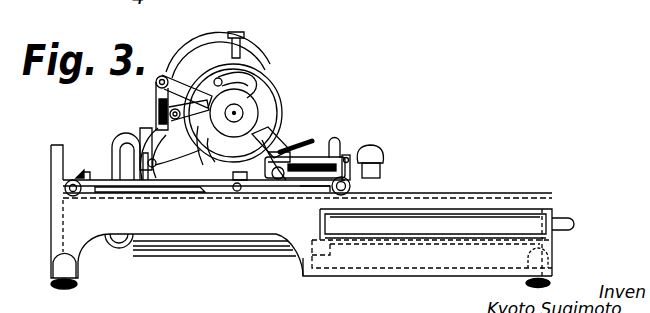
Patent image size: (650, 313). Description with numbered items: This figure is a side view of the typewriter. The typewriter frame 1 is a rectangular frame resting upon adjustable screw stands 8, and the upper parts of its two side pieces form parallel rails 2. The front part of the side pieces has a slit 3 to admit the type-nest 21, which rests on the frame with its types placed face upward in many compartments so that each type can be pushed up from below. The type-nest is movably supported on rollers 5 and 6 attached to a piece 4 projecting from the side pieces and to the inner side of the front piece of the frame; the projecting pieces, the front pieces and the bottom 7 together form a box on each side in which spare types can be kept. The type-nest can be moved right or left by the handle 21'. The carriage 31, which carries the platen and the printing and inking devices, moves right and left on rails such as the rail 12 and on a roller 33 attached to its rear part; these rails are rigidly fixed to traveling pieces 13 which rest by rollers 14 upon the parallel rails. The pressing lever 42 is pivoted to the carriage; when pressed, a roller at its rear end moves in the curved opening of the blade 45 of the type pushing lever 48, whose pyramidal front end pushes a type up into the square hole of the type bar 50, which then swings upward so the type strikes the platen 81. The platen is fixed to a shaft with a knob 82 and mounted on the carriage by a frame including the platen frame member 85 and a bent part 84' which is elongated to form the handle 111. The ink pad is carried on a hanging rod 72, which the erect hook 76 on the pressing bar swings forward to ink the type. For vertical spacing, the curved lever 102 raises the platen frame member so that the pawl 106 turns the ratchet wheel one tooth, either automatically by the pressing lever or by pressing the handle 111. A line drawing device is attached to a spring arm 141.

The typewriter frame 1 is at (52, 159).
The parallel rails 2 is at (523, 208).
The slit 3 is at (470, 209).
The projecting piece 4 is at (312, 258).
The roller 5 is at (332, 249).
The roller 6 is at (528, 252).
The bottom 7 is at (394, 266).
The adjustable screw stand 8 is at (78, 283).
The rail 12 is at (237, 192).
The traveling piece 13 is at (112, 187).
The roller 14 is at (70, 196).
The type-nest 21 is at (435, 225).
The handle 21' is at (531, 223).
The carriage 31 is at (150, 122).
The roller 33 is at (66, 188).
The pressing lever 42 is at (352, 185).
The blade 45 is at (116, 150).
The type pushing lever 48 is at (165, 250).
The type bar 50 is at (330, 197).
The hanging rod 72 is at (372, 158).
The erect hook 76 is at (344, 154).
The platen 81 is at (250, 92).
The knob 82 is at (282, 107).
The bent part 84' is at (274, 74).
The platen frame member 85 is at (260, 146).
The curved lever 102 is at (148, 97).
The pawl 106 is at (258, 60).
The handle 111 is at (268, 125).
The spring arm 141 is at (226, 50).